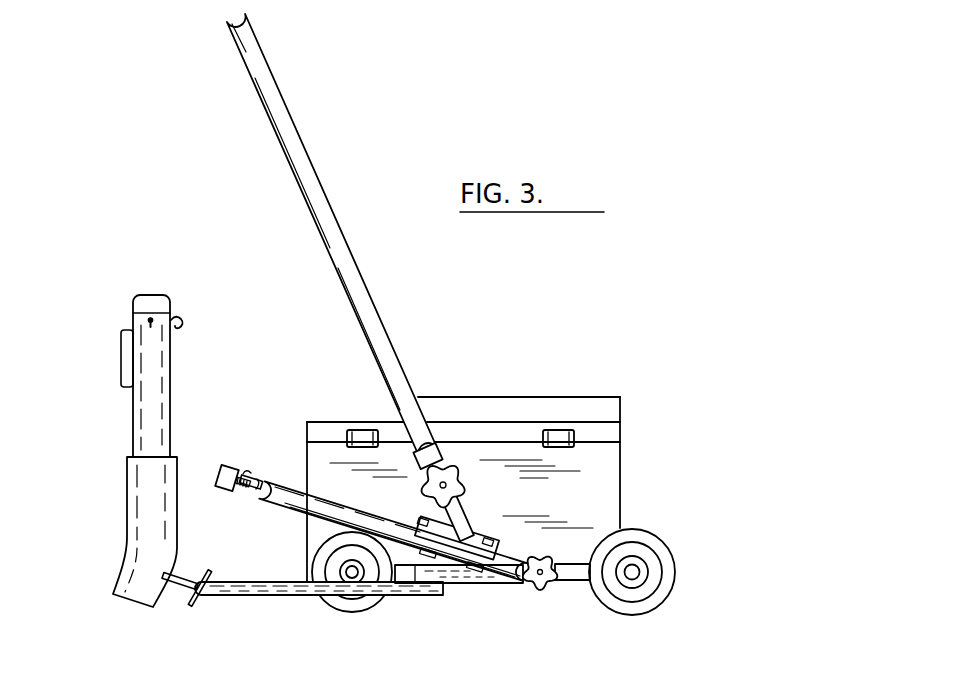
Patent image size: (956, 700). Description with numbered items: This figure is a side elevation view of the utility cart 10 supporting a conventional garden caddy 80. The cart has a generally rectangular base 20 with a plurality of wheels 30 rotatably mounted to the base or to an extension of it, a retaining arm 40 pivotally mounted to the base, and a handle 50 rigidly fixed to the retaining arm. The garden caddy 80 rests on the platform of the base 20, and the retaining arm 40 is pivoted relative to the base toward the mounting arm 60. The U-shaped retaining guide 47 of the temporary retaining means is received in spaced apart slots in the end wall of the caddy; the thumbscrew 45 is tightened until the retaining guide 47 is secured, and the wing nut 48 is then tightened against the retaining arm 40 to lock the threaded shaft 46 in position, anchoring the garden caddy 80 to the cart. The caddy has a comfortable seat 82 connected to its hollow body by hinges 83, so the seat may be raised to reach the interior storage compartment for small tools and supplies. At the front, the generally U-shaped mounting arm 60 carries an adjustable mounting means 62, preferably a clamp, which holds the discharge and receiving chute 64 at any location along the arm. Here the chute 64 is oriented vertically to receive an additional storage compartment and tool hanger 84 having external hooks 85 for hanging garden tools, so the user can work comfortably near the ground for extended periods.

The utility cart 10 is at (195, 187).
The base 20 is at (483, 583).
The wheel 30 is at (677, 562).
The retaining arm 40 is at (282, 480).
The thumbscrew 45 is at (222, 467).
The threaded shaft 46 is at (240, 487).
The U-shaped retaining guide 47 is at (300, 512).
The wing nut 48 is at (252, 478).
The handle 50 is at (303, 117).
The mounting arm 60 is at (232, 598).
The adjustable mounting means 62 is at (195, 603).
The discharge and receiving chute 64 is at (122, 492).
The garden caddy 80 is at (643, 447).
The seat 82 is at (520, 397).
The hinge 83 is at (360, 430).
The storage compartment and tool hanger 84 is at (120, 332).
The external hook 85 is at (186, 321).